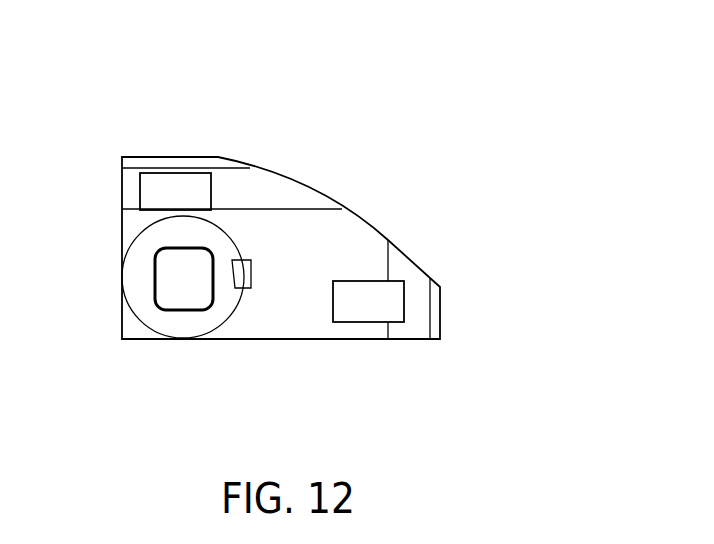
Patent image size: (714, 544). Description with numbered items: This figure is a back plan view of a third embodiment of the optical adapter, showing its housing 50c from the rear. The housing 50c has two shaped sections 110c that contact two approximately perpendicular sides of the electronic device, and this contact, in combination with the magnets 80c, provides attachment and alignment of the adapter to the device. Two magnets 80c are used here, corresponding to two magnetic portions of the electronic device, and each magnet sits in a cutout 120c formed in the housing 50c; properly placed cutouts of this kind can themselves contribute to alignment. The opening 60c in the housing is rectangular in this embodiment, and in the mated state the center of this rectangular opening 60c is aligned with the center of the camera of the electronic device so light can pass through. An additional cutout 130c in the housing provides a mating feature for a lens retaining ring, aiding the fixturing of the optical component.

The housing 50c is at (355, 233).
The opening 60c is at (180, 310).
The magnets 80c is at (178, 188).
The shaped sections 110c is at (139, 163).
The cutout for the magnet 120c is at (213, 193).
The additional cutout 130c is at (248, 272).